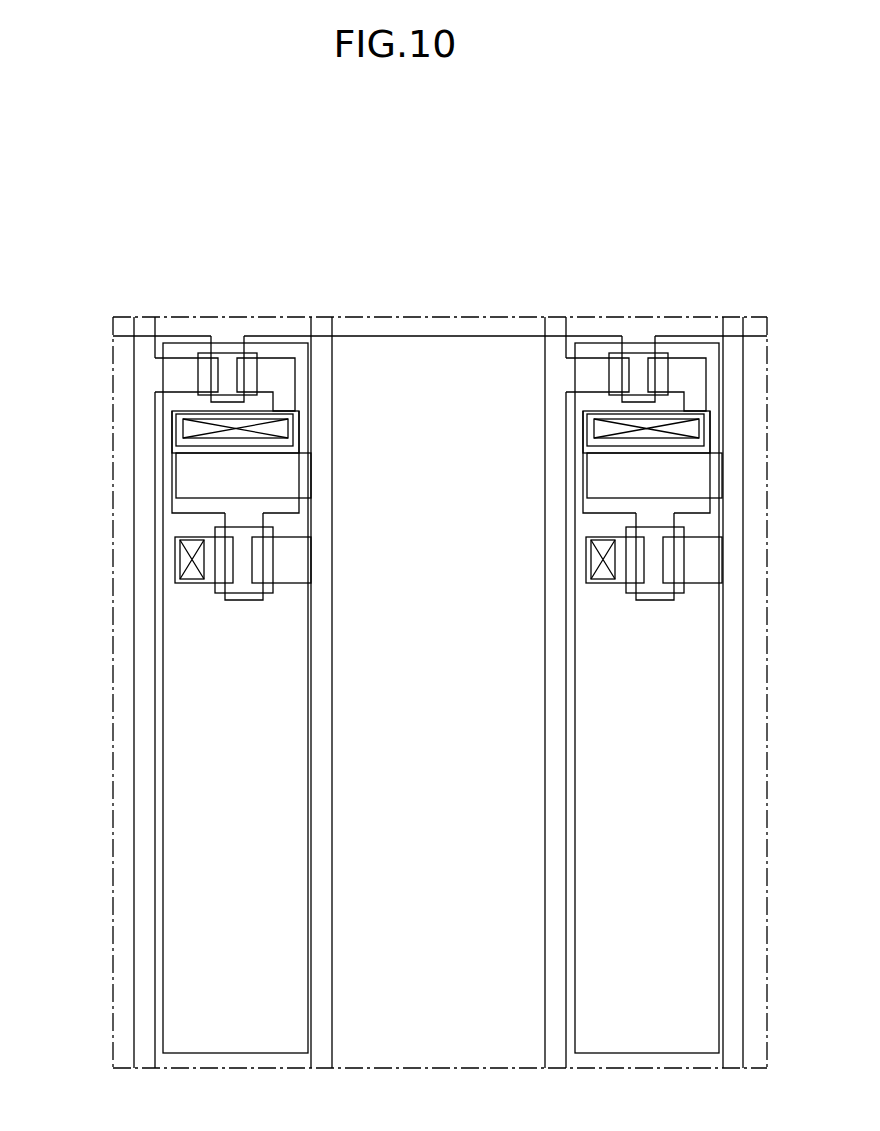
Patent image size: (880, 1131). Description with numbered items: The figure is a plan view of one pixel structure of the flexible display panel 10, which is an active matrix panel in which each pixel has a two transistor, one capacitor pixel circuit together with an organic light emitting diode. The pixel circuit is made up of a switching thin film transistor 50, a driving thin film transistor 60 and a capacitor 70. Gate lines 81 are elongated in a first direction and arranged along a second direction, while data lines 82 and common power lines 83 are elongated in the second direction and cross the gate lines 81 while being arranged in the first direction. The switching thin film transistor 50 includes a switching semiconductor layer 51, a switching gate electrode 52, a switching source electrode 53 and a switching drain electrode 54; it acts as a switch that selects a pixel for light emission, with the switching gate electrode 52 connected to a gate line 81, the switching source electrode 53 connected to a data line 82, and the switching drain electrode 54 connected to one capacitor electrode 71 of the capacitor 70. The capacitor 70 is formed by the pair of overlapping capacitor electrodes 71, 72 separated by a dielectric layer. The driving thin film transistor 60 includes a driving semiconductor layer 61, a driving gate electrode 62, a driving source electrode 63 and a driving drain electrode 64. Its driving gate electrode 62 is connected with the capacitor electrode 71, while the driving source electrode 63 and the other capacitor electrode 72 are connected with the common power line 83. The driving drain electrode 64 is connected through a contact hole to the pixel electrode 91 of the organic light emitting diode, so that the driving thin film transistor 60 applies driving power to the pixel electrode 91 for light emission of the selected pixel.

The flexible display panel 10 is at (412, 251).
The switching thin film transistor 50 is at (295, 251).
The switching semiconductor layer 51 is at (249, 350).
The switching gate electrode 52 is at (228, 356).
The switching source electrode 53 is at (181, 355).
The switching drain electrode 54 is at (277, 356).
The driving thin film transistor 60 is at (62, 590).
The driving semiconductor layer 61 is at (220, 594).
The driving gate electrode 62 is at (242, 600).
The driving source electrode 63 is at (285, 586).
The driving drain electrode 64 is at (203, 584).
The capacitor 70 is at (62, 473).
The capacitor electrode 71 is at (170, 503).
The capacitor electrode 72 is at (187, 498).
The gate line 81 is at (133, 326).
The data line 82 is at (143, 426).
The common power line 83 is at (320, 356).
The pixel electrode 91 is at (193, 822).